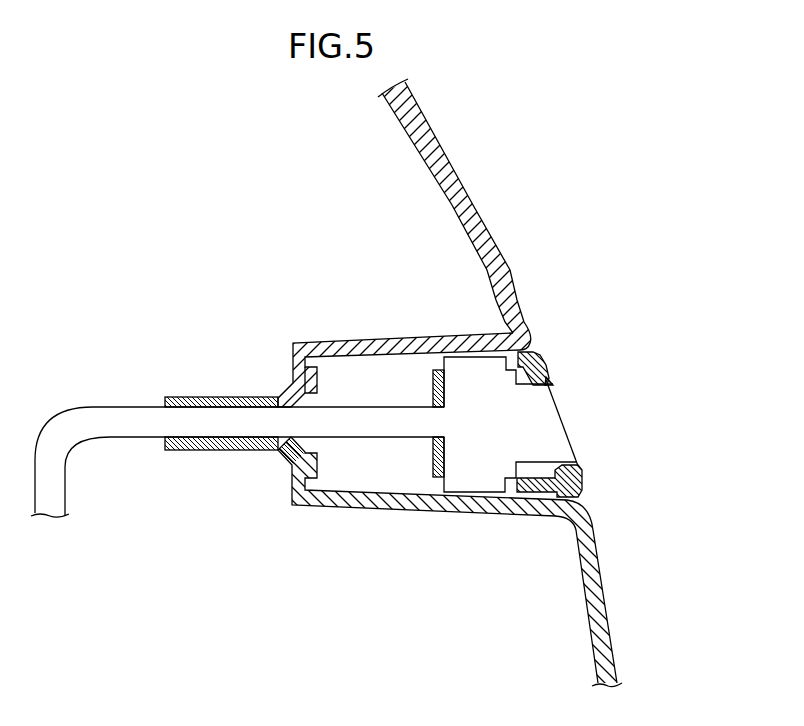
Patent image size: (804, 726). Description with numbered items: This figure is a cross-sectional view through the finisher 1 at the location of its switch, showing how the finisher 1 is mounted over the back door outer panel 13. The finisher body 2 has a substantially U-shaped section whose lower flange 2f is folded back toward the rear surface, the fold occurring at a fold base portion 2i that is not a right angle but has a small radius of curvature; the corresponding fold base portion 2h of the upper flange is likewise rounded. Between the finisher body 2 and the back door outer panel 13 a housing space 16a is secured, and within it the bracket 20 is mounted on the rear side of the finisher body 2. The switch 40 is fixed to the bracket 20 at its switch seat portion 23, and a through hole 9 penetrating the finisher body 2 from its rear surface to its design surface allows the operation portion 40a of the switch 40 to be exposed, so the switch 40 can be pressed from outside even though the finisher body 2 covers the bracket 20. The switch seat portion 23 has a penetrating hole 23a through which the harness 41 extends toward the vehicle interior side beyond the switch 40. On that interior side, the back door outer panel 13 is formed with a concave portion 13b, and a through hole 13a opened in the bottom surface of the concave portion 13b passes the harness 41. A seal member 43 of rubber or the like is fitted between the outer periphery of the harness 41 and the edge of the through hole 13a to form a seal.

The finisher 1 is at (580, 358).
The finisher body 2 is at (584, 472).
The lower flange 2f is at (543, 494).
The fold base portion 2h is at (540, 350).
The fold base portion 2i is at (580, 493).
The through hole 9 is at (550, 391).
The back door outer panel 13 is at (475, 205).
The through hole 13a is at (277, 468).
The concave portion 13b is at (350, 493).
The housing space 16a is at (330, 357).
The bracket 20 is at (429, 367).
The switch seat portion 23 is at (433, 389).
The penetrating hole 23a is at (433, 438).
The switch 40 is at (472, 480).
The operation portion 40a is at (564, 427).
The harness 41 is at (118, 430).
The seal member 43 is at (185, 450).